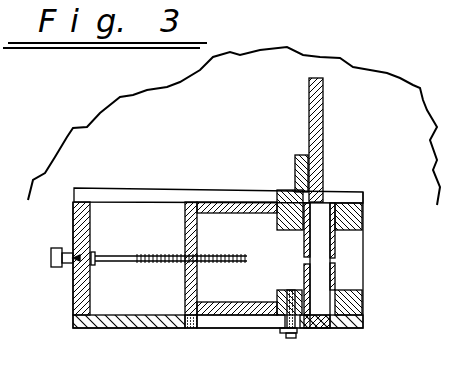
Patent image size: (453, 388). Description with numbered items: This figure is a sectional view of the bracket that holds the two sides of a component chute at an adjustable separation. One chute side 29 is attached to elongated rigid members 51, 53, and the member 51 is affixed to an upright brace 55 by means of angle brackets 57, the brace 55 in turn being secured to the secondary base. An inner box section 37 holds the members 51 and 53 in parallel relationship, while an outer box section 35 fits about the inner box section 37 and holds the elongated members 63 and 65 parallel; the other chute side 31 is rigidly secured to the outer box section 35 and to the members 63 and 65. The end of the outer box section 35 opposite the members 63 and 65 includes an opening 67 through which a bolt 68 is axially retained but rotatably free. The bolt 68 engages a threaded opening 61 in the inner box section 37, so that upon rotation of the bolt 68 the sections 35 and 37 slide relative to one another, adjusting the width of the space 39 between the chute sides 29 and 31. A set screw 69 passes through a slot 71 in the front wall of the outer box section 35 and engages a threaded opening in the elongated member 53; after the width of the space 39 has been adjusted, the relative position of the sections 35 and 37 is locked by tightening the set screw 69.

The chute side 29 is at (304, 265).
The other chute side 31 is at (337, 271).
The outer box section 35 is at (165, 324).
The inner box section 37 is at (213, 201).
The space 39 is at (318, 305).
The elongated rigid member 51 is at (277, 226).
The elongated rigid member 53 is at (277, 293).
The upright brace 55 is at (325, 136).
The angle brackets 57 is at (295, 173).
The threaded opening 61 is at (198, 259).
The elongated member 63 is at (363, 221).
The elongated member 65 is at (363, 306).
The opening 67 is at (72, 260).
The bolt 68 is at (112, 256).
The set screw 69 is at (291, 338).
The slot 71 is at (253, 322).